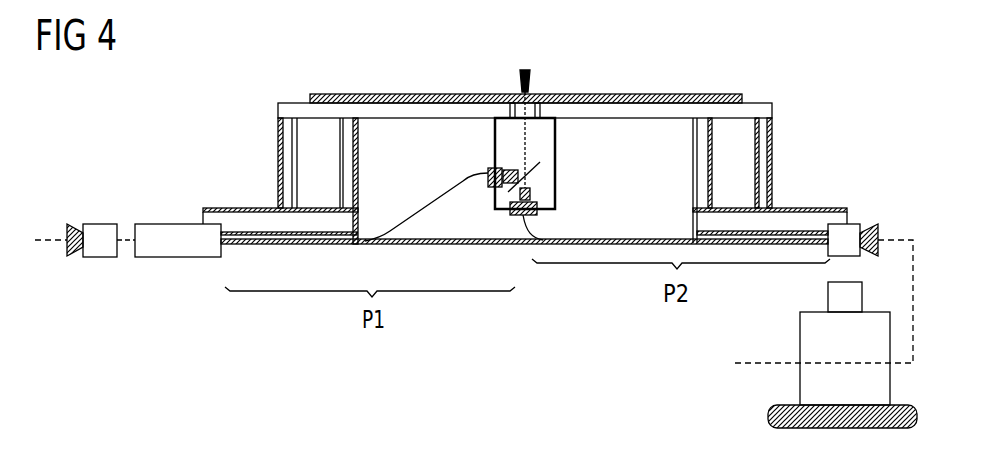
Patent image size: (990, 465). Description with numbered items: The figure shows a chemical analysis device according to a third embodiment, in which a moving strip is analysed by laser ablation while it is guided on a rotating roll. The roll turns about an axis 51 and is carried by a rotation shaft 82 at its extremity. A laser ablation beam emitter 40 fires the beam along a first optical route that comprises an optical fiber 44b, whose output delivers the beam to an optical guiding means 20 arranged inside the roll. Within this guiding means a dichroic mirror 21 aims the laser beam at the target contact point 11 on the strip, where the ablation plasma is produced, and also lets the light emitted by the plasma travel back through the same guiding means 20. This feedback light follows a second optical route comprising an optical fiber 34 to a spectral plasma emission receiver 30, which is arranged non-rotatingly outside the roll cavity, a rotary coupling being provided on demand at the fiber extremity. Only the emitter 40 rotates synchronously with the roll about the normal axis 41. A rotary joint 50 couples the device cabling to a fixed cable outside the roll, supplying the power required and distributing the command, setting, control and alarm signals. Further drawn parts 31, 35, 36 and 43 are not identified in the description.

The target contact point 11 is at (526, 69).
The optical guiding means 20 is at (558, 138).
The dichroic mirror 21 is at (532, 172).
The spectral plasma emission receiver 30 is at (890, 378).
The control line 31 is at (768, 362).
The optical fiber 34 is at (645, 240).
The mounting block 35 is at (512, 217).
The base 36 is at (790, 406).
The laser ablation beam emitter 40 is at (168, 258).
The normal axis 41 is at (520, 156).
The signal link 43 is at (127, 238).
The optical fiber 44b is at (425, 213).
The rotary joint 50 is at (103, 258).
The axis 51 is at (50, 244).
The rotation shaft 82 is at (226, 207).